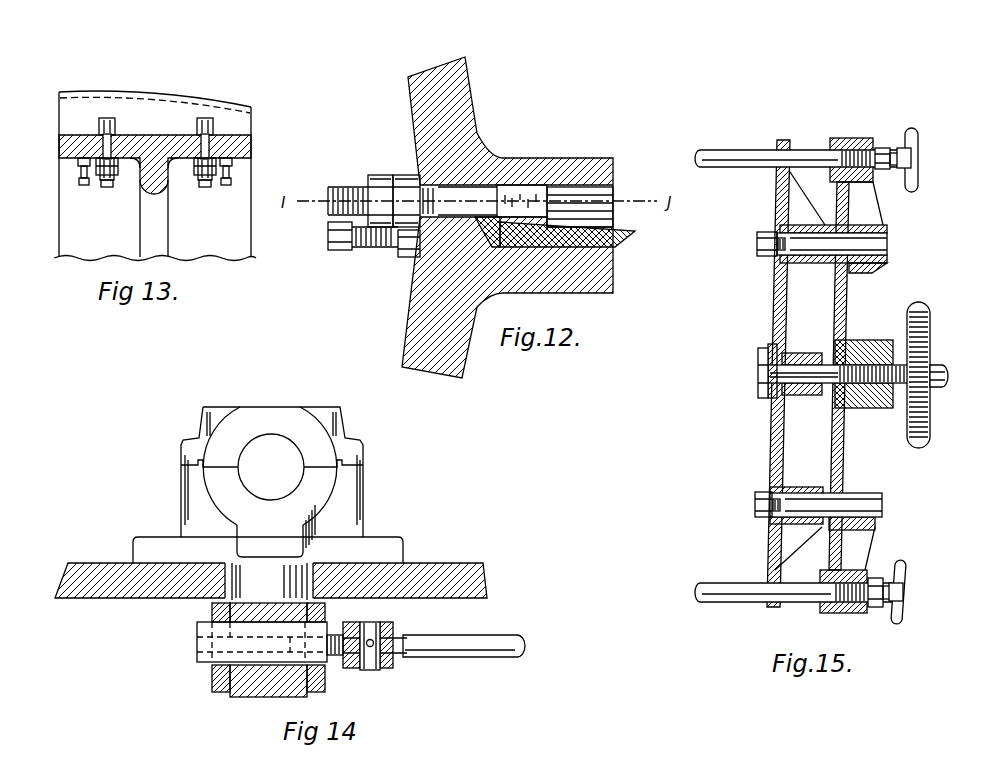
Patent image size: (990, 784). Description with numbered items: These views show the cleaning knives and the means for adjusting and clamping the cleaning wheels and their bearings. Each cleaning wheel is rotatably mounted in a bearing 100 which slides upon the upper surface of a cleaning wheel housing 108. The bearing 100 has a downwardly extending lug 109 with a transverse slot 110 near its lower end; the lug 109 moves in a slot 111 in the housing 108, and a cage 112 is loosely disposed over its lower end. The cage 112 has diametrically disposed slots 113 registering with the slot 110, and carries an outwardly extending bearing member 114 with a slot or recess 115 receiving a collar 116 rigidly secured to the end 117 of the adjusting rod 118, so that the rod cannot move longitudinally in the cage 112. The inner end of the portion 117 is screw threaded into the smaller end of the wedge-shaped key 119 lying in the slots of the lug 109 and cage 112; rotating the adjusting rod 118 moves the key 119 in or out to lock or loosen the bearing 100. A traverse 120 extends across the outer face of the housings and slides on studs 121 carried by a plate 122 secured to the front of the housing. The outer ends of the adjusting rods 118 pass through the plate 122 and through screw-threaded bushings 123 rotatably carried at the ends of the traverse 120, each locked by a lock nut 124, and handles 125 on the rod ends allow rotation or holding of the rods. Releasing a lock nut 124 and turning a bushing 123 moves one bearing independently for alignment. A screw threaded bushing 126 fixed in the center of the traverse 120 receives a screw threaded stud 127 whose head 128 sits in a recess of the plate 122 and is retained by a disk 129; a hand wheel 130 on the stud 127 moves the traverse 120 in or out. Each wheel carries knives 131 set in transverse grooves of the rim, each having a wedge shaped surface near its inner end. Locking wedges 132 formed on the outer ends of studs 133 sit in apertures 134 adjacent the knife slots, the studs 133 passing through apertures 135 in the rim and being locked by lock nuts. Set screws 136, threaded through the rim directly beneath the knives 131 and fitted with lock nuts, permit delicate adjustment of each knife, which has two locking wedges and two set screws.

In FIG. 14, the bearing 100 is at (337, 493).
In FIG. 14, the cleaning wheel housing 108 is at (480, 556).
In FIG. 14, the lug 109 is at (250, 598).
In FIG. 14, the transverse slot 110 is at (327, 616).
In FIG. 14, the slot 111 is at (227, 568).
In FIG. 14, the cage 112 is at (213, 683).
In FIG. 14, the slots 113 is at (213, 668).
In FIG. 14, the bearing member 114 is at (387, 664).
In FIG. 14, the slot or recess 115 is at (362, 669).
In FIG. 14, the collar 116 is at (370, 624).
In FIG. 14, the end of adjusting rod 117 is at (387, 645).
In FIG. 14, the adjusting rod 118 is at (453, 637).
In FIG. 15, the adjusting rod 118 is at (713, 168).
In FIG. 14, the wedge-shaped key 119 is at (205, 643).
In FIG. 15, the traverse 120 is at (860, 210).
In FIG. 15, the studs 121 is at (878, 237).
In FIG. 15, the plate 122 is at (775, 437).
In FIG. 15, the screw-threaded bushing 123 is at (841, 147).
In FIG. 15, the lock nut 124 is at (880, 148).
In FIG. 15, the handle 125 is at (919, 137).
In FIG. 15, the screw threaded bushing 126 is at (908, 336).
In FIG. 15, the screw threaded stud 127 is at (907, 367).
In FIG. 15, the head 128 is at (768, 384).
In FIG. 15, the disk 129 is at (768, 374).
In FIG. 15, the hand wheel 130 is at (930, 428).
In FIG. 13, the knife 131 is at (237, 86).
In FIG. 12, the knife 131 is at (617, 248).
In FIG. 13, the locking wedge 132 is at (197, 126).
In FIG. 12, the locking wedge 132 is at (523, 207).
In FIG. 13, the stud 133 is at (125, 170).
In FIG. 12, the stud 133 is at (463, 199).
In FIG. 12, the aperture 134 is at (590, 213).
In FIG. 12, the aperture 135 is at (413, 256).
In FIG. 13, the set screw 136 is at (80, 169).
In FIG. 12, the set screw 136 is at (367, 248).